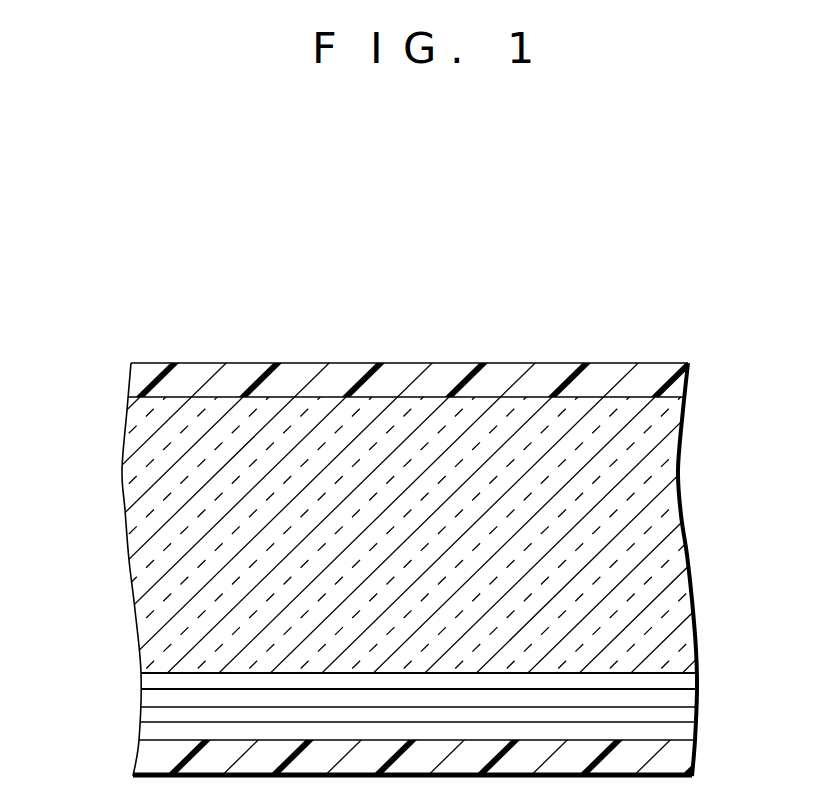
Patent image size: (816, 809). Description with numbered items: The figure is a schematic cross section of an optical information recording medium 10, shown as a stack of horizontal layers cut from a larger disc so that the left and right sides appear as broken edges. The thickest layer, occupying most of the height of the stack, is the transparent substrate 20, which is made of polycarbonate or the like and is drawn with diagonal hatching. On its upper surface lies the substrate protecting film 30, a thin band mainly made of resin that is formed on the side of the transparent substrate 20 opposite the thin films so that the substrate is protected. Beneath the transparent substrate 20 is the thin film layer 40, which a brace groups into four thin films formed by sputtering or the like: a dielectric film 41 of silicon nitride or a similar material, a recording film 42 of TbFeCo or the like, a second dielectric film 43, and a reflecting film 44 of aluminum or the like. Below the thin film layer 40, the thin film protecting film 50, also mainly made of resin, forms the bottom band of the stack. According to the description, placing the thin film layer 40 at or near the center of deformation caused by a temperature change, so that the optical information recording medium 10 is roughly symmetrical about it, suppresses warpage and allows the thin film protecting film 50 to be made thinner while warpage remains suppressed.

The optical information recording medium 10 is at (661, 264).
The transparent substrate 20 is at (687, 556).
The substrate protecting film 30 is at (677, 383).
The thin film layer 40 is at (353, 712).
The dielectric film 41 is at (145, 683).
The recording film 42 is at (145, 702).
The dielectric film 43 is at (145, 715).
The reflecting film 44 is at (379, 741).
The thin film protecting film 50 is at (673, 762).